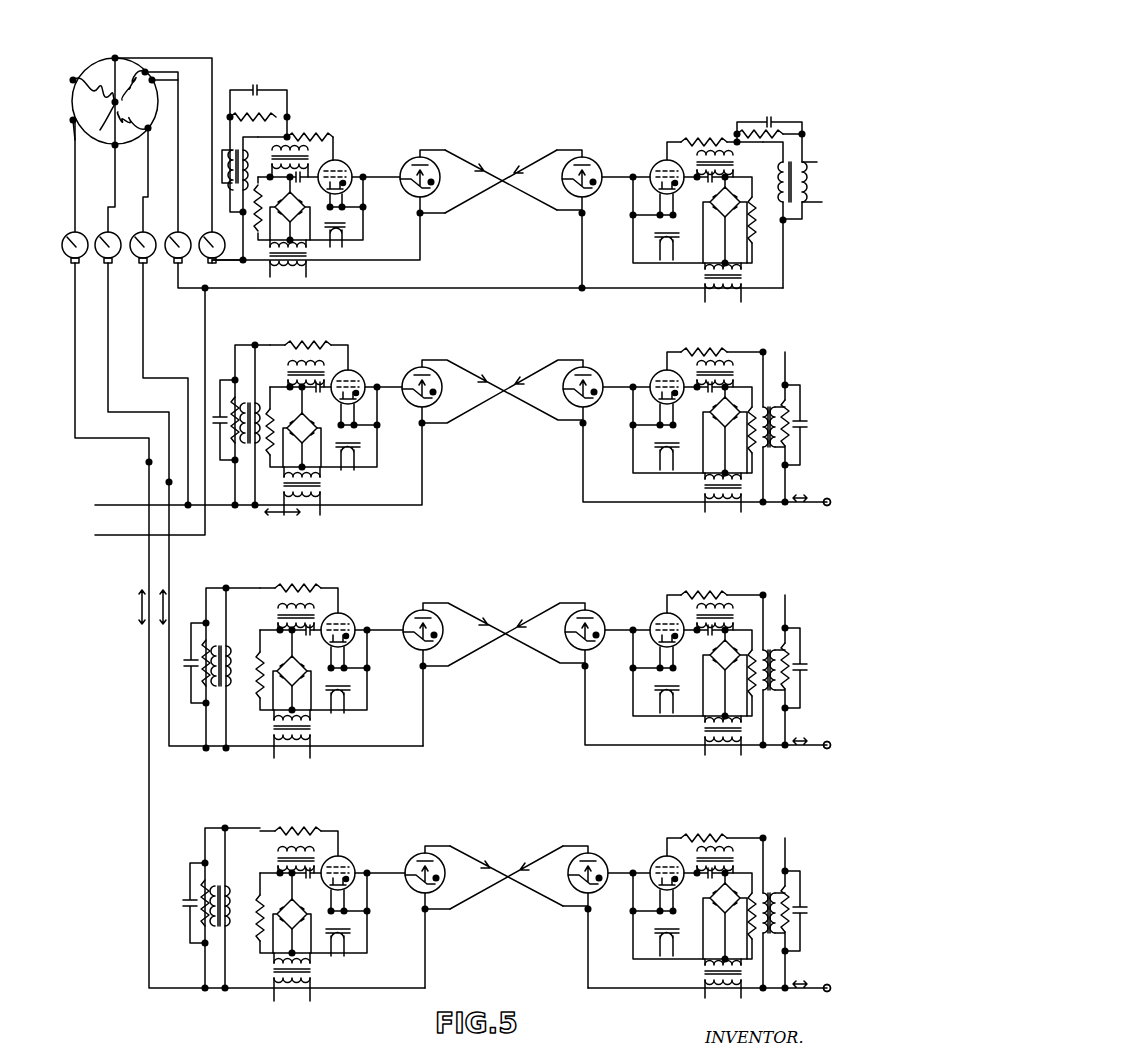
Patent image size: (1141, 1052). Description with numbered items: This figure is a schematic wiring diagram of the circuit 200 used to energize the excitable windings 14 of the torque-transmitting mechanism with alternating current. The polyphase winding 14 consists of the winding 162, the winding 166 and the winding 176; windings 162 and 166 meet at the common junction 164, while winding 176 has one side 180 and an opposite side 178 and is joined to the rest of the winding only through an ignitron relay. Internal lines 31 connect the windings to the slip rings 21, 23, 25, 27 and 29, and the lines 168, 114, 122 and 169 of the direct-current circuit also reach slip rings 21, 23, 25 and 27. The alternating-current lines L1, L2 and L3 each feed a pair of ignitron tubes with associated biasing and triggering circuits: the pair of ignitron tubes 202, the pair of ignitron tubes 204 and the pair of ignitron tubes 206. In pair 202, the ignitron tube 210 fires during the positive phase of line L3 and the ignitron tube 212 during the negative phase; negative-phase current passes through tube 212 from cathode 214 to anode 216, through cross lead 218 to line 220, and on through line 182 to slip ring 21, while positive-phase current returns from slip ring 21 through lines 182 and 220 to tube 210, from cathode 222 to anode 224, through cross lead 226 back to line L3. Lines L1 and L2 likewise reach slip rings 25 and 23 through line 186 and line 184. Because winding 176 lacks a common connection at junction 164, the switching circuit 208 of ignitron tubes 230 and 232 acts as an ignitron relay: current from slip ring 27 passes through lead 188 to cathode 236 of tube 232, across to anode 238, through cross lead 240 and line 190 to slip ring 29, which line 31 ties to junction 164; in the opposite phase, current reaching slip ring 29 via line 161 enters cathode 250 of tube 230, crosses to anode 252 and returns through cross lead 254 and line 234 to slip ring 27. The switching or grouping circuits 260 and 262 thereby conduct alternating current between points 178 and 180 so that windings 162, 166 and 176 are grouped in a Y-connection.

The excitable windings 14 is at (117, 46).
The line 161 is at (100, 62).
The winding 166 is at (88, 65).
The common junction 164 is at (110, 125).
The winding 162 is at (123, 132).
The winding 176 is at (118, 92).
The opposite side of winding 176 178 is at (145, 72).
The one side of winding 176 180 is at (152, 80).
The lines 31 is at (180, 97).
The slip ring 21 is at (94, 225).
The slip ring 23 is at (128, 225).
The slip ring 25 is at (150, 232).
The slip ring 27 is at (180, 232).
The slip ring 29 is at (222, 230).
The line 190 is at (222, 262).
The lead 188 is at (178, 288).
The line 186 is at (143, 360).
The line 168 is at (149, 462).
The line 114 is at (169, 482).
The line 122 is at (241, 469).
The line 169 is at (134, 415).
The line 182 is at (149, 664).
The line 184 is at (169, 682).
The circuit 200 is at (513, 192).
The switching circuit 208 is at (517, 197).
The pair of ignitron tubes 206 is at (522, 428).
The pair of ignitron tubes 204 is at (509, 671).
The pair of ignitron tubes 202 is at (507, 905).
The ignitron tube 230 is at (400, 160).
The ignitron tube 232 is at (603, 160).
The anode 252 is at (420, 157).
The cathode 250 is at (418, 197).
The cross lead 254 is at (478, 155).
The cross lead 240 is at (515, 165).
The anode 238 is at (583, 158).
The cathode 236 is at (584, 205).
The line 234 is at (470, 288).
The switching or grouping circuit 260 is at (392, 233).
The switching or grouping circuit 262 is at (628, 284).
The ignitron tube 210 is at (405, 855).
The ignitron tube 212 is at (606, 857).
The anode 224 is at (425, 853).
The cathode 222 is at (412, 893).
The cross lead 218 is at (530, 860).
The cross lead 226 is at (553, 905).
The anode 216 is at (591, 853).
The cathode 214 is at (594, 895).
The line 220 is at (427, 978).
The alternating-current line L1 is at (830, 500).
The alternating-current line L2 is at (834, 740).
The alternating-current line L3 is at (830, 982).